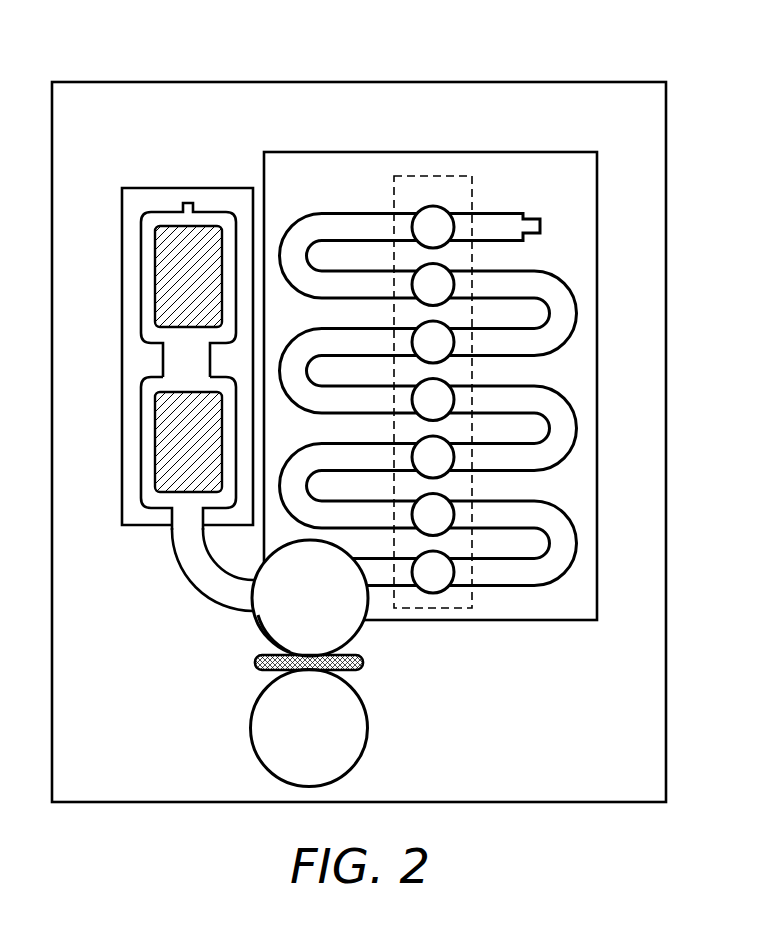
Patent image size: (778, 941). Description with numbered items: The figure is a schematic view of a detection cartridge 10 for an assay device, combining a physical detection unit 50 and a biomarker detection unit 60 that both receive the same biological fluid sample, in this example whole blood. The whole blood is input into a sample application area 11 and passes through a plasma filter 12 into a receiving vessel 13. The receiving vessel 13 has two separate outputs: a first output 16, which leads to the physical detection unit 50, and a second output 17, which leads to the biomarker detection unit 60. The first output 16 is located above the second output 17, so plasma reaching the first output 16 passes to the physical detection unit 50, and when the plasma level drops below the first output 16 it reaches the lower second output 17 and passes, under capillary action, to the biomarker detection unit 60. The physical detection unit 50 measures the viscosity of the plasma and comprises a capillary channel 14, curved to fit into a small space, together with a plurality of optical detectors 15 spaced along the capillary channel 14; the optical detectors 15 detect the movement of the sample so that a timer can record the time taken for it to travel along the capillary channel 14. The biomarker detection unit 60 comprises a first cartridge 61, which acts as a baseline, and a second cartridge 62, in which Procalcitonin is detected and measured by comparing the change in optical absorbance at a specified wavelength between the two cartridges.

The detection cartridge 10 is at (641, 81).
The sample application area 11 is at (368, 722).
The plasma filter 12 is at (364, 663).
The receiving vessel 13 is at (260, 632).
The capillary channel 14 is at (578, 310).
The optical detectors 15 is at (454, 229).
The first output 16 is at (358, 573).
The second output 17 is at (253, 598).
The physical detection unit 50 is at (576, 622).
The biomarker detection unit 60 is at (145, 188).
The first cartridge 61 is at (155, 443).
The second cartridge 62 is at (155, 278).